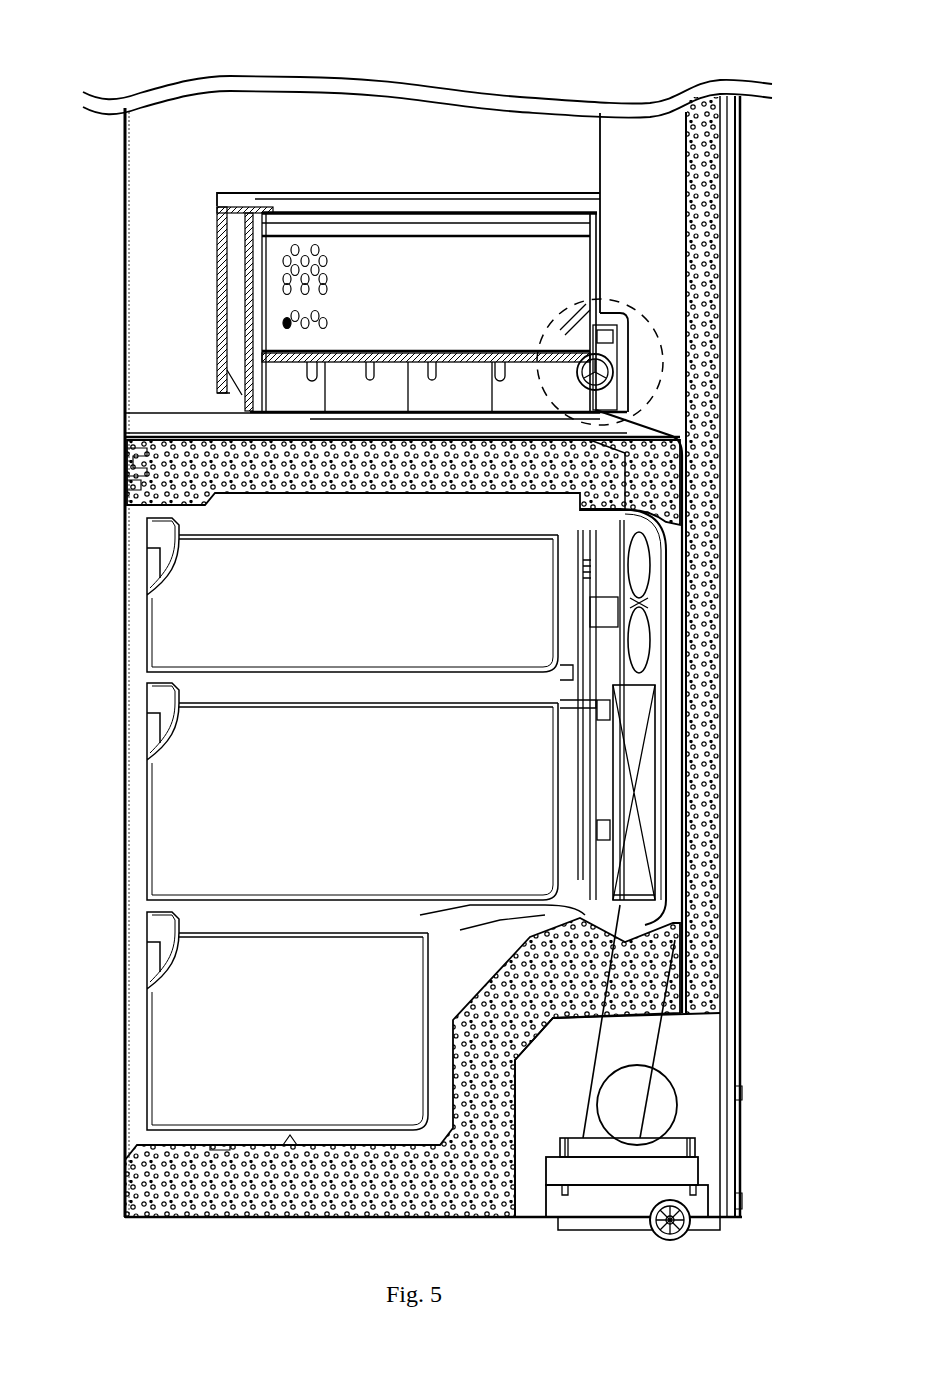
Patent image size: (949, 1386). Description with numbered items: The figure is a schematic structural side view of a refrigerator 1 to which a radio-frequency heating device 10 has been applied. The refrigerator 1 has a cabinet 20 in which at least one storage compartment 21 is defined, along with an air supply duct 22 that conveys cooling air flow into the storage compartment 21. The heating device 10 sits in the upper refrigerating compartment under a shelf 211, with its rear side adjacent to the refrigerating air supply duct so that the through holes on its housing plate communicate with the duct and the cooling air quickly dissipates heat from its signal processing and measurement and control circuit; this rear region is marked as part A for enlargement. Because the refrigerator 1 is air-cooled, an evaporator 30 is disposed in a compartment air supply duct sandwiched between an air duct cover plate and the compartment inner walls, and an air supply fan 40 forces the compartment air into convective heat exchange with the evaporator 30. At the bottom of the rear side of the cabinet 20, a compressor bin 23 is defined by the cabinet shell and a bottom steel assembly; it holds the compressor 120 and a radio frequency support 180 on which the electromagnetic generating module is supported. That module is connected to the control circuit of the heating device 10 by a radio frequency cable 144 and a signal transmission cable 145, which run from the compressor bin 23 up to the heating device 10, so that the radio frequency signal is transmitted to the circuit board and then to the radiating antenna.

The refrigerator 1 is at (57, 40).
The cabinet 20 is at (745, 128).
The storage compartment 21 is at (160, 183).
The air supply duct 22 is at (655, 196).
The compressor bin 23 is at (697, 1073).
The shelf 211 is at (357, 193).
The heating device 10 is at (205, 298).
The part A is at (625, 296).
The radio frequency cable 144 is at (633, 455).
The signal transmission cable 145 is at (680, 540).
The air supply fan 40 is at (640, 578).
The evaporator 30 is at (640, 797).
The compressor 120 is at (677, 1146).
The radio frequency support 180 is at (673, 1173).